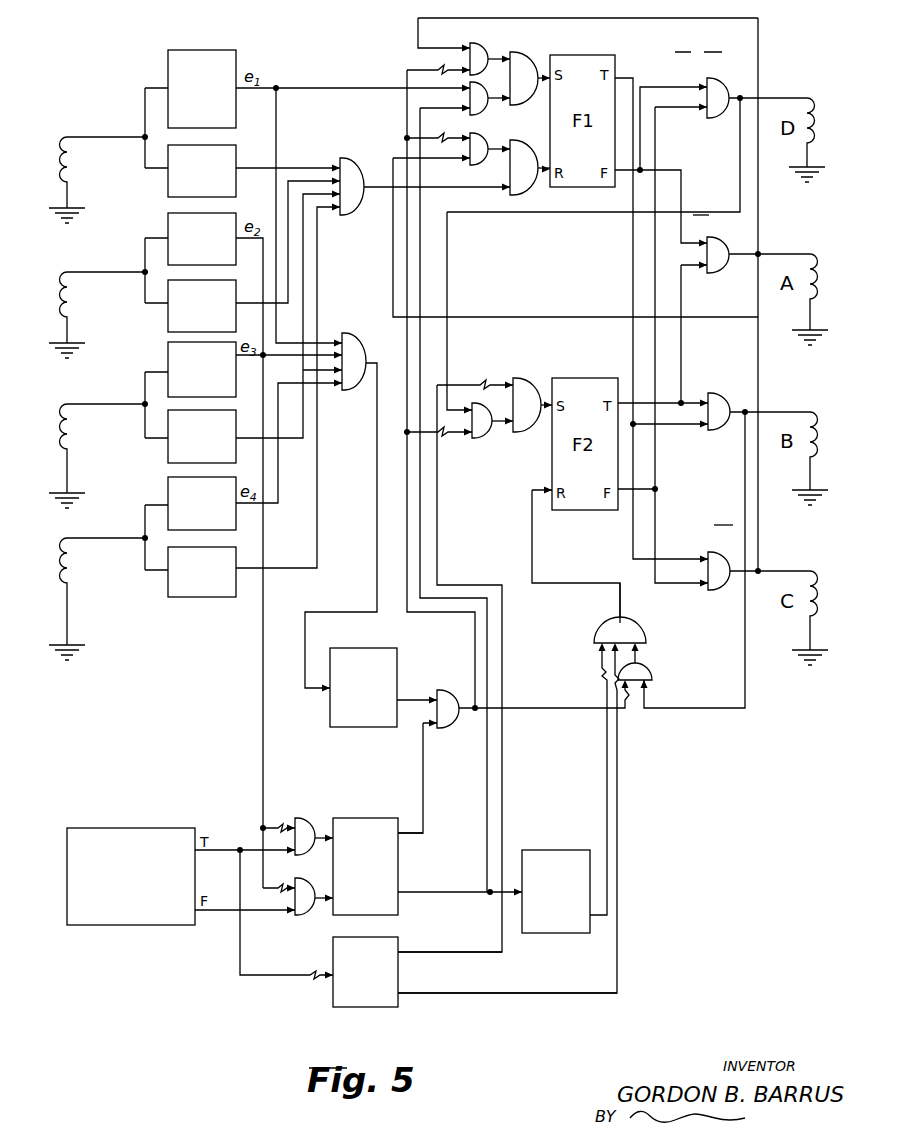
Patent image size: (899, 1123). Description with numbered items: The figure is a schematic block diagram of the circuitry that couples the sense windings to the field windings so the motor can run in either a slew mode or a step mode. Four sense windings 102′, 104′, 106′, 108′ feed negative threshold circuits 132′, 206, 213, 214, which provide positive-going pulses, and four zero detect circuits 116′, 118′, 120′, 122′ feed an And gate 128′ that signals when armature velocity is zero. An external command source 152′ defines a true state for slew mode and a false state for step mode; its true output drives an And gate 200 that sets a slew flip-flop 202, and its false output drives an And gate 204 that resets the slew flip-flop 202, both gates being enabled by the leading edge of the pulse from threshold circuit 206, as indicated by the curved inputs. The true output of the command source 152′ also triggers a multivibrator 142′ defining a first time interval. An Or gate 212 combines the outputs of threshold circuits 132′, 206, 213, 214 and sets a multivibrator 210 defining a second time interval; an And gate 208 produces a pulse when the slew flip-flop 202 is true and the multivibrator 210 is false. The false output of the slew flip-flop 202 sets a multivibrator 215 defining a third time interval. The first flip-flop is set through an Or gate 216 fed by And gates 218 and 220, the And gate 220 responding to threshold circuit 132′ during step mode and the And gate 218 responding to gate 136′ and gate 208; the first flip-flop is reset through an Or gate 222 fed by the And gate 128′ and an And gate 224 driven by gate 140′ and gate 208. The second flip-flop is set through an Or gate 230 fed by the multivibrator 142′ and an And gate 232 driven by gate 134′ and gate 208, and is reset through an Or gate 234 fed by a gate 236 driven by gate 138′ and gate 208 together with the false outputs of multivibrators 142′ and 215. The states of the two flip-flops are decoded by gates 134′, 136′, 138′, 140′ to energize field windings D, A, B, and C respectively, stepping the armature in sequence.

The sense winding 102′ is at (97, 180).
The sense winding 104′ is at (97, 315).
The sense winding 106′ is at (97, 456).
The sense winding 108′ is at (97, 599).
The zero detect circuit 116′ is at (238, 159).
The zero detect circuit 118′ is at (168, 318).
The zero detect circuit 120′ is at (168, 448).
The zero detect circuit 122′ is at (168, 592).
The And gate 128′ is at (356, 153).
The threshold circuit 132′ is at (186, 51).
The gate 134′ is at (722, 119).
The gate 136′ is at (716, 274).
The gate 138′ is at (722, 431).
The gate 140′ is at (722, 591).
The multivibrator 142′ is at (398, 942).
The external command source 152′ is at (135, 829).
The And gate 200 is at (313, 808).
The slew flip-flop 202 is at (355, 818).
The And gate 204 is at (308, 916).
The negative threshold circuit 206 is at (168, 222).
The And gate 208 is at (455, 683).
The multivibrator 210 is at (360, 648).
The Or gate 212 is at (350, 333).
The threshold circuit 213 is at (168, 352).
The threshold circuit 214 is at (168, 490).
The multivibrator 215 is at (553, 851).
The Or gate 216 is at (540, 44).
The And gate 218 is at (493, 41).
The And gate 220 is at (487, 112).
The Or gate 222 is at (530, 194).
The And gate 224 is at (483, 165).
The Or gate 230 is at (520, 378).
The And gate 232 is at (481, 438).
The Or gate 234 is at (612, 624).
The gate 236 is at (648, 672).